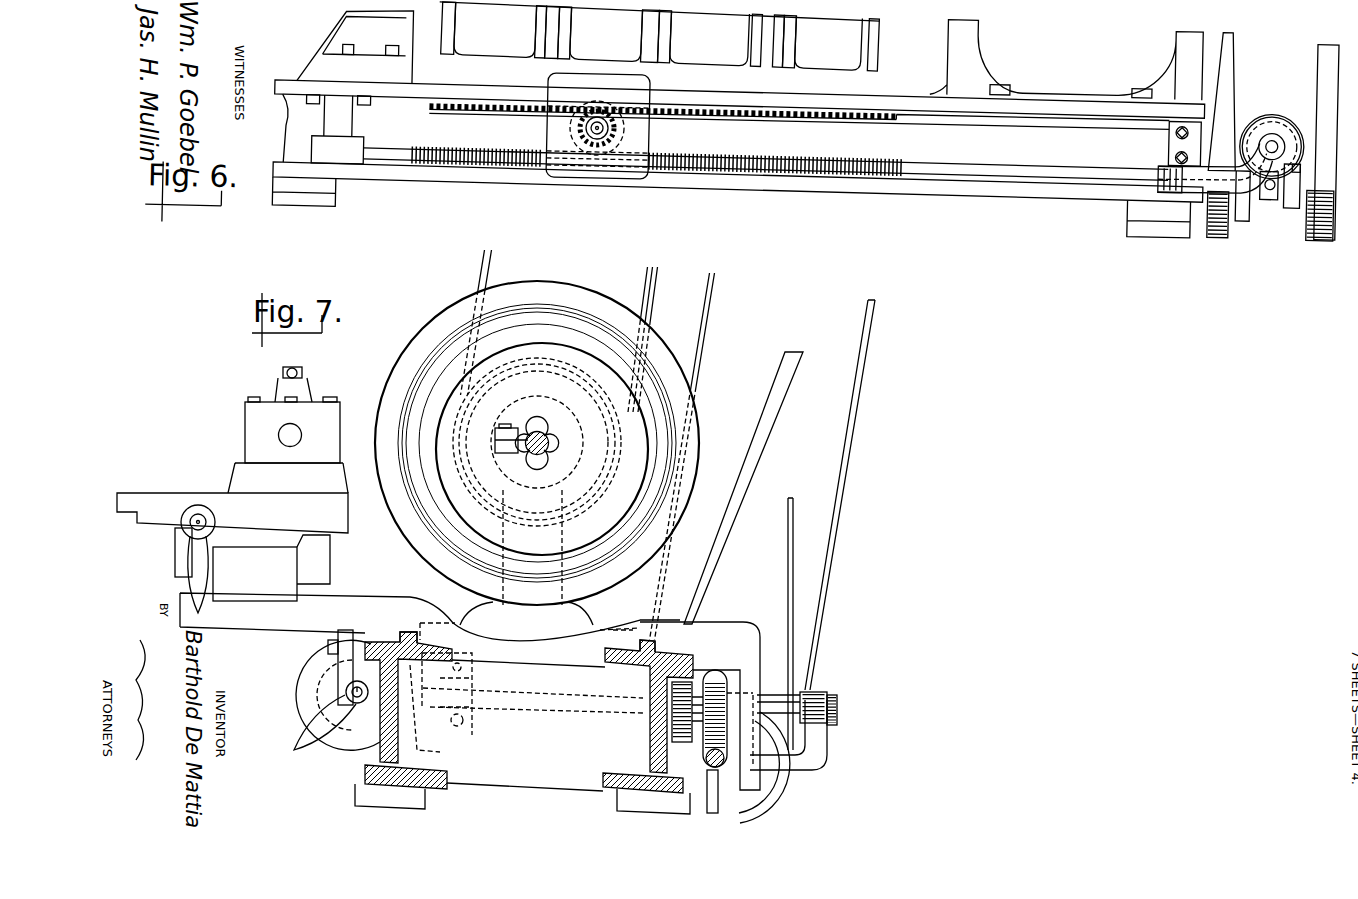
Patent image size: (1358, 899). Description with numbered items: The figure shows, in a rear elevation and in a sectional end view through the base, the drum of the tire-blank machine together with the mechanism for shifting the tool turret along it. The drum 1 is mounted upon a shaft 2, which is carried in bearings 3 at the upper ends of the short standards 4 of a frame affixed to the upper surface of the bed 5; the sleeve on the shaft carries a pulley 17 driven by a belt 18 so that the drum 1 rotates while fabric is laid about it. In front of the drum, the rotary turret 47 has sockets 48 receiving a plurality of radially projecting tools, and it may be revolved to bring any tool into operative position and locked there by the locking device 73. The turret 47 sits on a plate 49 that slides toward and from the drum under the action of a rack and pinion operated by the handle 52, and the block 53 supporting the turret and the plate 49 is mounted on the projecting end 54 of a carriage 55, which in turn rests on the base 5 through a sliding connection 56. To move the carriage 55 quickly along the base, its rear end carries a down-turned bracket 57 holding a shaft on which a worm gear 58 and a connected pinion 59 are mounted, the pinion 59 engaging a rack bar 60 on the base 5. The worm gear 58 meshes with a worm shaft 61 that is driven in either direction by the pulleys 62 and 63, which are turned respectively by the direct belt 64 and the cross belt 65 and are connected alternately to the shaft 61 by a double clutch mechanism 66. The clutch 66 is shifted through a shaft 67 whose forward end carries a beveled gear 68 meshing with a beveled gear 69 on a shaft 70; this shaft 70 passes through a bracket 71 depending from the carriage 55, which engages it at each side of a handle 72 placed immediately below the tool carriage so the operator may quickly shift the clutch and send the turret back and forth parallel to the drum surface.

In FIG. 6, the drum 1 is at (726, 62).
In FIG. 7, the drum 1 is at (588, 294).
In FIG. 7, the shaft 2 is at (551, 443).
In FIG. 7, the bearings 3 is at (541, 401).
In FIG. 6, the short standards 4 is at (968, 63).
In FIG. 7, the short standards 4 is at (492, 612).
In FIG. 6, the bed 5 is at (847, 180).
In FIG. 7, the bed 5 is at (500, 778).
In FIG. 7, the pulley 17 is at (537, 443).
In FIG. 7, the belt 18 is at (497, 262).
In FIG. 7, the rotary turret 47 is at (246, 410).
In FIG. 7, the sockets 48 is at (280, 430).
In FIG. 7, the plate 49 is at (232, 500).
In FIG. 7, the handle 52 is at (190, 558).
In FIG. 7, the block 53 is at (252, 564).
In FIG. 7, the projecting end 54 is at (316, 613).
In FIG. 7, the carriage 55 is at (529, 702).
In FIG. 7, the sliding connection 56 is at (414, 632).
In FIG. 6, the down-turned bracket 57 is at (598, 126).
In FIG. 7, the down-turned bracket 57 is at (753, 680).
In FIG. 6, the worm gear 58 is at (580, 117).
In FIG. 7, the worm gear 58 is at (718, 672).
In FIG. 6, the pinion 59 is at (620, 122).
In FIG. 7, the pinion 59 is at (650, 740).
In FIG. 6, the rack bar 60 is at (822, 106).
In FIG. 7, the rack bar 60 is at (695, 628).
In FIG. 6, the worm shaft 61 is at (957, 152).
In FIG. 7, the worm shaft 61 is at (716, 775).
In FIG. 6, the pulley 62 is at (1311, 218).
In FIG. 6, the pulley 63 is at (1211, 218).
In FIG. 7, the pulley 63 is at (778, 800).
In FIG. 6, the direct belt 64 is at (1318, 52).
In FIG. 7, the direct belt 64 is at (835, 543).
In FIG. 6, the cross belt 65 is at (1236, 40).
In FIG. 7, the cross belt 65 is at (762, 432).
In FIG. 6, the double clutch mechanism 66 is at (1277, 180).
In FIG. 6, the shaft 67 is at (1276, 120).
In FIG. 7, the shaft 67 is at (550, 705).
In FIG. 6, the beveled gear 68 is at (1272, 93).
In FIG. 7, the beveled gear 68 is at (417, 740).
In FIG. 6, the beveled gear 69 is at (1237, 103).
In FIG. 7, the beveled gear 69 is at (300, 688).
In FIG. 7, the shaft 70 is at (355, 710).
In FIG. 7, the bracket 71 is at (342, 640).
In FIG. 7, the handle 72 is at (296, 742).
In FIG. 7, the locking device 73 is at (302, 375).